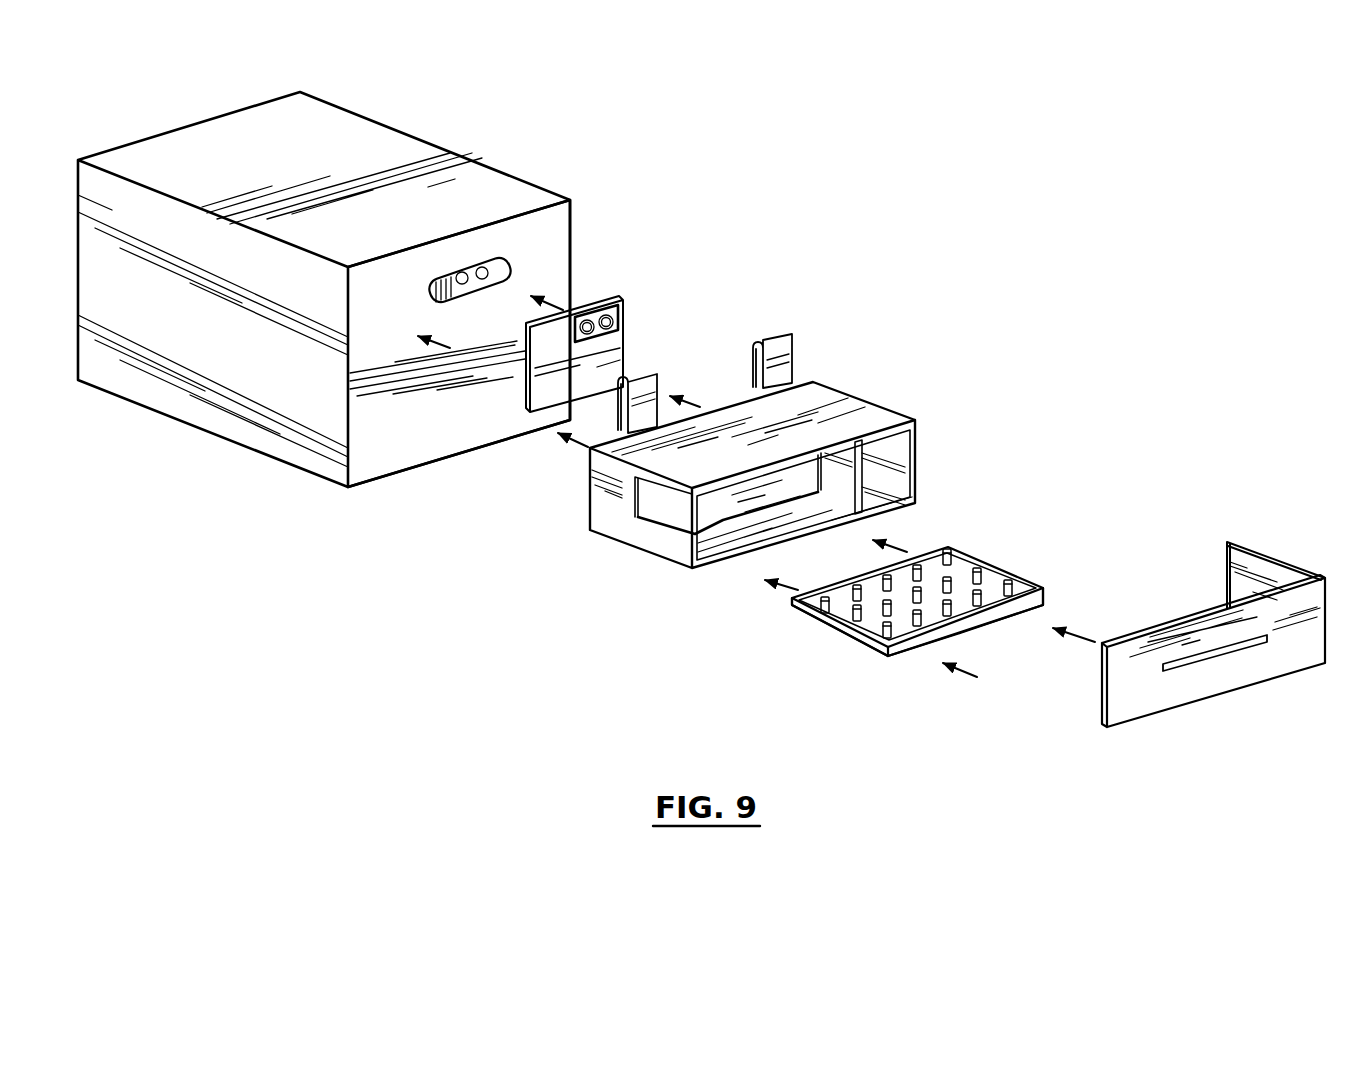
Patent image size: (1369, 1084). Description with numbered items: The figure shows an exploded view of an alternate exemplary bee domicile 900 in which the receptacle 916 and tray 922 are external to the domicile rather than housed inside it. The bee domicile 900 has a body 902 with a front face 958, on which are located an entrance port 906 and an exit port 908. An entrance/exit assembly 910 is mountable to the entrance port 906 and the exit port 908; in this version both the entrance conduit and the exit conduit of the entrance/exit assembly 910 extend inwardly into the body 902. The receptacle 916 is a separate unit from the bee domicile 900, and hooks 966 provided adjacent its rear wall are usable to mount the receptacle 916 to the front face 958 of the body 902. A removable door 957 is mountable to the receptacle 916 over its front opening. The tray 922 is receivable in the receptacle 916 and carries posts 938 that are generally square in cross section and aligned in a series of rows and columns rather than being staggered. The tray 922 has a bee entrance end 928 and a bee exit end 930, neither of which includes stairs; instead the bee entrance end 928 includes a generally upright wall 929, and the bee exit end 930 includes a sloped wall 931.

The bee domicile 900 is at (540, 150).
The body 902 is at (415, 138).
The entrance port 906 is at (457, 275).
The exit port 908 is at (486, 284).
The front face 958 is at (553, 232).
The entrance/exit assembly 910 is at (615, 338).
The hooks 966 is at (648, 378).
The receptacle 916 is at (880, 415).
The bee entrance end 928 is at (1017, 568).
The upright wall 929 is at (1048, 582).
The sloped wall 931 is at (804, 606).
The bee exit end 930 is at (822, 636).
The posts 938 is at (862, 634).
The tray 922 is at (1018, 617).
The removable door 957 is at (1127, 703).